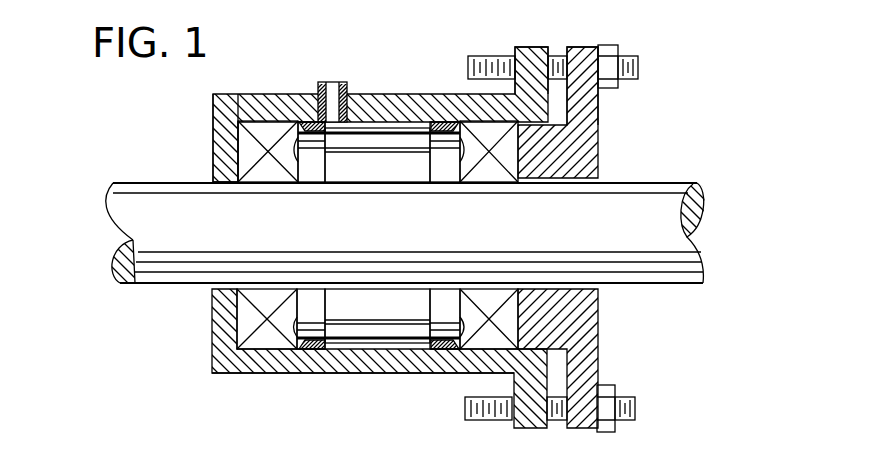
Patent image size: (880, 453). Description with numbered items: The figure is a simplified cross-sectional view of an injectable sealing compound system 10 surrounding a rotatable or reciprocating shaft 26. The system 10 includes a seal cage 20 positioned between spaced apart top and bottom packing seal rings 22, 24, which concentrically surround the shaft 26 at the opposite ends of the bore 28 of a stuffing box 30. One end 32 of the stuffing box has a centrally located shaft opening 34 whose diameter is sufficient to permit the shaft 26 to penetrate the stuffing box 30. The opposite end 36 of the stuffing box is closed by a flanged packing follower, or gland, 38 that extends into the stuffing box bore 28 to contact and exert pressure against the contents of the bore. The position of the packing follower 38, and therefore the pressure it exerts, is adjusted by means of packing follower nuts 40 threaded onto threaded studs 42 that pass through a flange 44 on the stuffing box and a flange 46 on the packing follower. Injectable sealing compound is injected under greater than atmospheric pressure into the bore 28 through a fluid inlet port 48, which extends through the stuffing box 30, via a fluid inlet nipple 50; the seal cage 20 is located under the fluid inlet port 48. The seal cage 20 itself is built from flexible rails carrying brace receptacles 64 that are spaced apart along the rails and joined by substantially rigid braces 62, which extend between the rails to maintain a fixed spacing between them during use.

The injectable sealing compound system 10 is at (658, 50).
The seal cage 20 is at (311, 358).
The top packing seal ring 22 is at (482, 338).
The bottom packing seal ring 24 is at (263, 340).
The shaft 26 is at (688, 232).
The bore 28 is at (370, 124).
The stuffing box 30 is at (431, 94).
The end of the stuffing box 32 is at (213, 165).
The shaft opening 34 is at (232, 290).
The opposite end of the stuffing box 36 is at (552, 102).
The packing follower 38 is at (543, 312).
The packing follower nuts 40 is at (619, 85).
The threaded studs 42 is at (638, 70).
The flange on the stuffing box 44 is at (530, 46).
The flange on the packing follower 46 is at (577, 47).
The fluid inlet port 48 is at (334, 108).
The fluid inlet nipple 50 is at (318, 87).
The braces 62 is at (378, 373).
The brace receptacles 64 is at (443, 160).